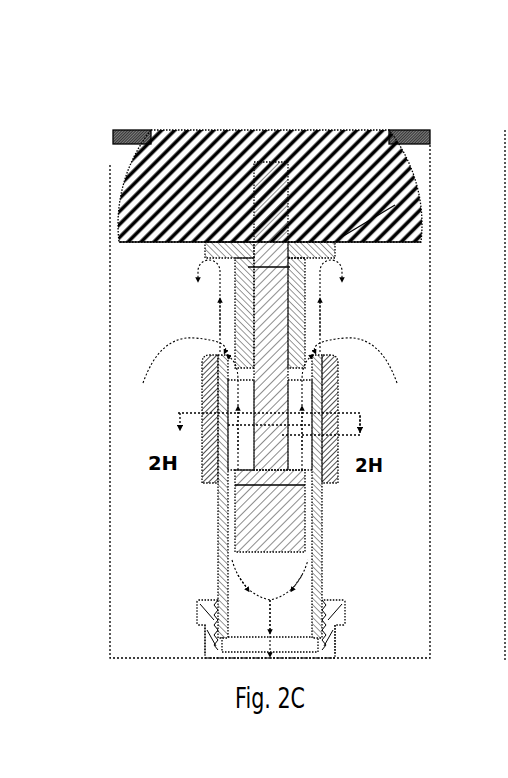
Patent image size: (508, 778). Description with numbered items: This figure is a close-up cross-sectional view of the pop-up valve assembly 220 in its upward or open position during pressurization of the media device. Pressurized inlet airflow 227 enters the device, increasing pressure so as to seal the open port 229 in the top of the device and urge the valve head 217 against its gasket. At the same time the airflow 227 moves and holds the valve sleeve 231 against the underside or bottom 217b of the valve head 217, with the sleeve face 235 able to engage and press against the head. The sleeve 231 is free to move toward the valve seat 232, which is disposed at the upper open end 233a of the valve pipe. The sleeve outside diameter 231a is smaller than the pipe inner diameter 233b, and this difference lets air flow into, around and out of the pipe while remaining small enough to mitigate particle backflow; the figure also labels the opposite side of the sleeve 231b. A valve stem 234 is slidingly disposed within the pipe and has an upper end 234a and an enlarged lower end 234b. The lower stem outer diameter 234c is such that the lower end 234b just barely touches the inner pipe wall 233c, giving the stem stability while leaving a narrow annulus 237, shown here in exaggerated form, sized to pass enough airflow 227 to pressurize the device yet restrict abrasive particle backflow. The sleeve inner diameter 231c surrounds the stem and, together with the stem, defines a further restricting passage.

The valve head 217 is at (143, 163).
The bottom of valve head 217b is at (147, 242).
The valve assembly 220 is at (110, 445).
The inlet airflow 227 is at (148, 368).
The port 229 is at (368, 130).
The valve sleeve 231 is at (284, 305).
The sleeve outside diameter 231a is at (240, 302).
The sleeve right wall 231b is at (291, 313).
The sleeve inner diameter 231c is at (248, 283).
The valve seat 232 is at (372, 350).
The upper open end of valve pipe 233a is at (335, 390).
The pipe inner diameter 233b is at (240, 435).
The inner pipe wall 233c is at (230, 604).
The valve stem 234 is at (301, 430).
The upper end of valve stem 234a is at (272, 201).
The lower end of valve stem 234b is at (280, 527).
The lower stem outer diameter 234c is at (233, 488).
The sleeve face 235 is at (395, 205).
The annulus 237 is at (233, 523).